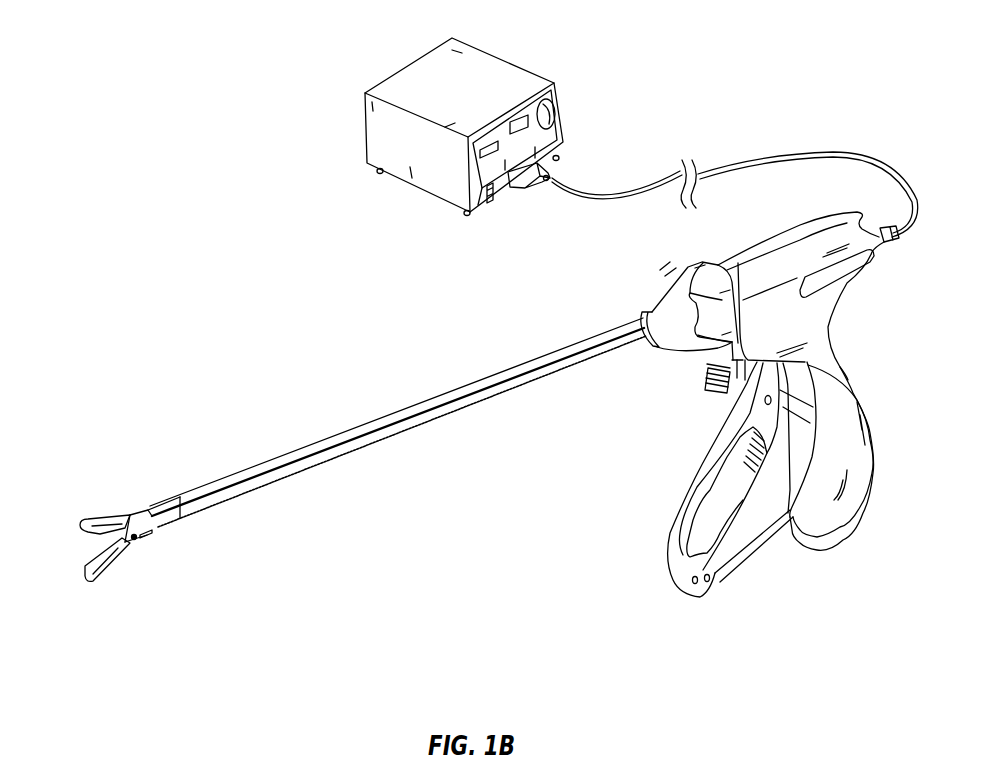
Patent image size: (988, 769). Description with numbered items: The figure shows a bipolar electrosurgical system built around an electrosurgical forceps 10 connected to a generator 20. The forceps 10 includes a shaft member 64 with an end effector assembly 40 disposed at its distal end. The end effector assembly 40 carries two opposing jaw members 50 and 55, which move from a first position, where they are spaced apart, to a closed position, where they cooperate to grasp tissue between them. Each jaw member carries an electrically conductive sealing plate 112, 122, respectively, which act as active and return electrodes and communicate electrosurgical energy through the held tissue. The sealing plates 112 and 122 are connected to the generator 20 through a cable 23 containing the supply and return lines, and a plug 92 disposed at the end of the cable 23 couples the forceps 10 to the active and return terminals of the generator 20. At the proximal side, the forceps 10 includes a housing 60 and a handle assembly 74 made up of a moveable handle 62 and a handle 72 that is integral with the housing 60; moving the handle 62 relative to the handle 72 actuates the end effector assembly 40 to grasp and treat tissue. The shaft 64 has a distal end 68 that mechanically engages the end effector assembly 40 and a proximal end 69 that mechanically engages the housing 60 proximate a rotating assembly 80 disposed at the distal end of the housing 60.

The electrosurgical forceps 10 is at (178, 262).
The generator 20 is at (430, 64).
The cable 23 is at (847, 152).
The end effector assembly 40 is at (172, 545).
The jaw member 50 is at (95, 523).
The jaw member 55 is at (93, 583).
The housing 60 is at (805, 214).
The moveable handle 62 is at (705, 602).
The shaft member 64 is at (515, 382).
The distal end 68 is at (158, 527).
The proximal end 69 is at (630, 325).
The handle 72 is at (838, 550).
The handle assembly 74 is at (715, 485).
The rotating assembly 80 is at (668, 356).
The plug 92 is at (542, 155).
The electrically conductive sealing plate 112 is at (90, 536).
The electrically conductive sealing plate 122 is at (90, 563).